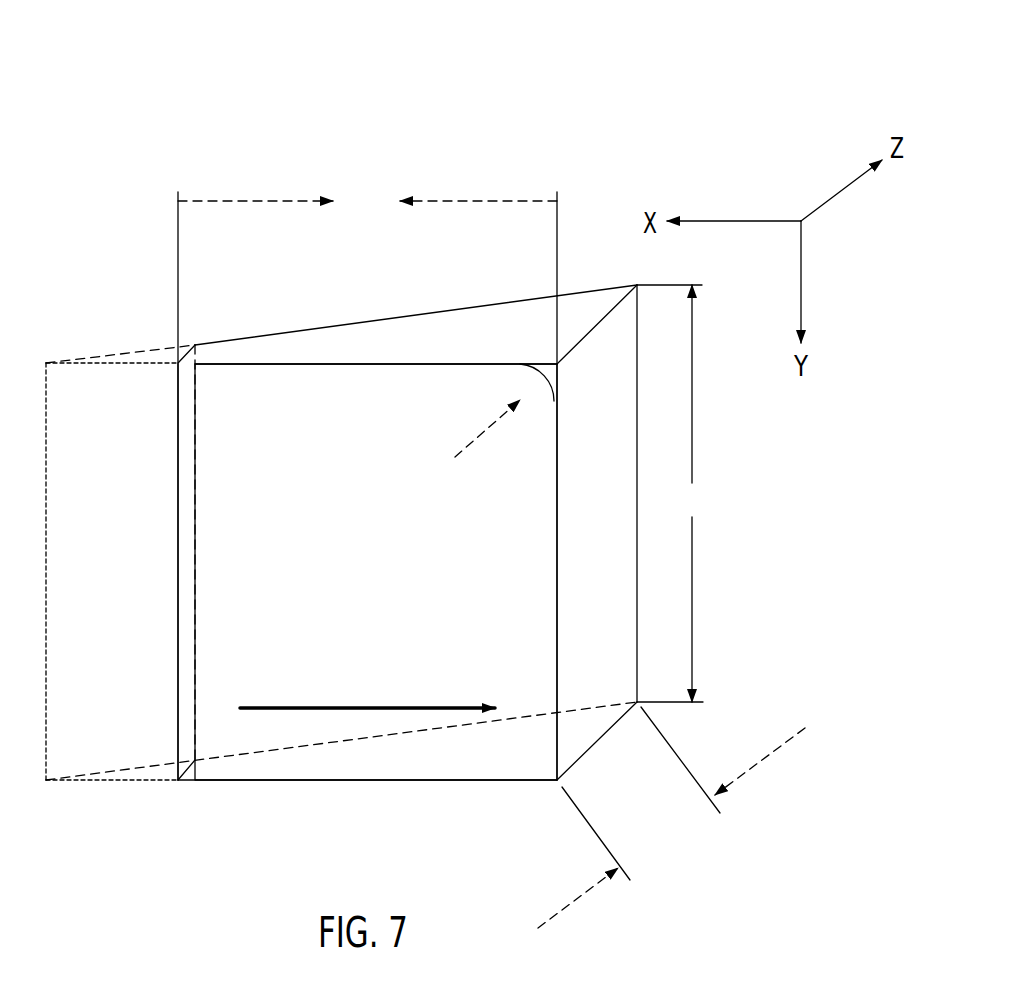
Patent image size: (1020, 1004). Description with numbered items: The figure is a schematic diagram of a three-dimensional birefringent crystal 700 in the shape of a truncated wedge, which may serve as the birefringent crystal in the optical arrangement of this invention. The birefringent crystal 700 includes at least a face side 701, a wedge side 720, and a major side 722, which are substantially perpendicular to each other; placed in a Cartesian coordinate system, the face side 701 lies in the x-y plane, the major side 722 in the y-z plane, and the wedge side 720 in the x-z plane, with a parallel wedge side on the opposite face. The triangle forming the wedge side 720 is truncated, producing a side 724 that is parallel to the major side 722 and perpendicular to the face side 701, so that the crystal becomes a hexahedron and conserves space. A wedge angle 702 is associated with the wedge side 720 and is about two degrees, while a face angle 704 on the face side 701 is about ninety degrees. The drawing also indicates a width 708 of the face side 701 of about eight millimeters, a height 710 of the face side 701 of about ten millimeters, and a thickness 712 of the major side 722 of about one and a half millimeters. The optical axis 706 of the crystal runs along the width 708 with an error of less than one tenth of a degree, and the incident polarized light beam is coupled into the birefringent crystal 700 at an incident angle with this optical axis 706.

The birefringent crystal 700 is at (160, 103).
The face side 701 is at (385, 552).
The wedge angle 702 is at (132, 356).
The face angle 704 is at (487, 430).
The optical axis 706 is at (370, 712).
The width 708 is at (494, 200).
The height 710 is at (692, 420).
The thickness 712 is at (752, 768).
The wedge side 720 is at (514, 348).
The major side 722 is at (613, 520).
The side 724 is at (185, 510).